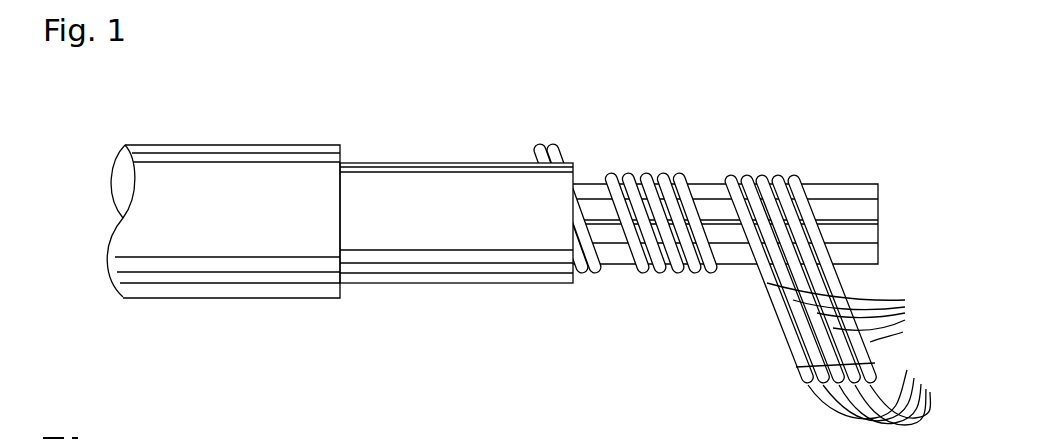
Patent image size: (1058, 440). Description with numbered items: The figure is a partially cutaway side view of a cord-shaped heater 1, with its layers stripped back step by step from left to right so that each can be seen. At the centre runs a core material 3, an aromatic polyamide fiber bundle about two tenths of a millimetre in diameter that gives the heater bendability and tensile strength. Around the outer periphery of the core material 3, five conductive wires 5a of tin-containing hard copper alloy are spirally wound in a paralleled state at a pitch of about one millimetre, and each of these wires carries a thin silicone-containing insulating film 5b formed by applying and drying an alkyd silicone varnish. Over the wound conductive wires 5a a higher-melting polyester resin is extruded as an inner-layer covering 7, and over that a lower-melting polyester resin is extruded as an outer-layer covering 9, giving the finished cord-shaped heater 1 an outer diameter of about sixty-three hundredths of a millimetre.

The cord-shaped heater 1 is at (530, 244).
The core material 3 is at (874, 250).
The conductive wires 5a is at (747, 287).
The insulating film 5b is at (852, 312).
The inner-layer covering 7 is at (457, 163).
The outer-layer covering 9 is at (242, 144).